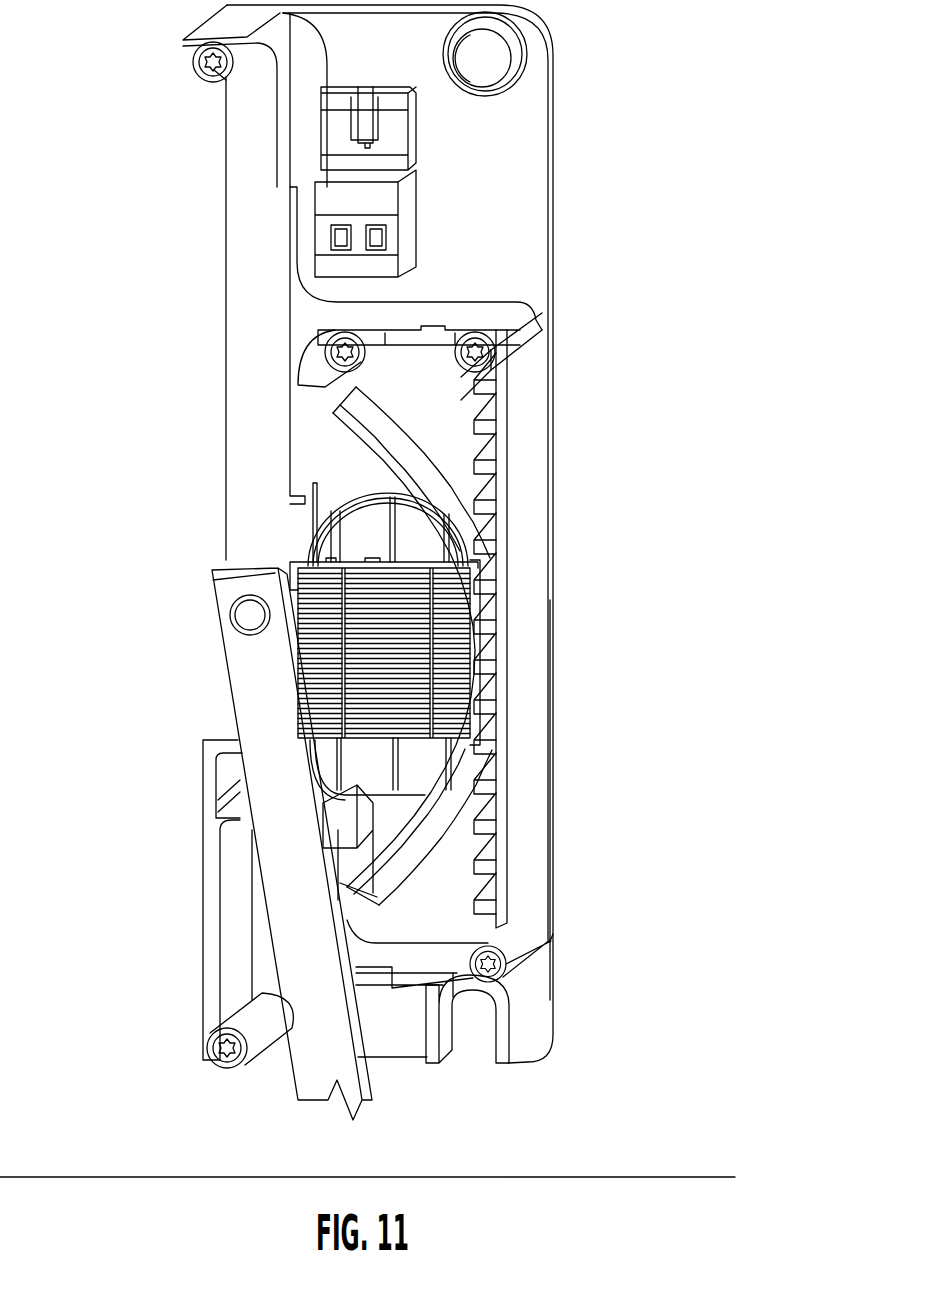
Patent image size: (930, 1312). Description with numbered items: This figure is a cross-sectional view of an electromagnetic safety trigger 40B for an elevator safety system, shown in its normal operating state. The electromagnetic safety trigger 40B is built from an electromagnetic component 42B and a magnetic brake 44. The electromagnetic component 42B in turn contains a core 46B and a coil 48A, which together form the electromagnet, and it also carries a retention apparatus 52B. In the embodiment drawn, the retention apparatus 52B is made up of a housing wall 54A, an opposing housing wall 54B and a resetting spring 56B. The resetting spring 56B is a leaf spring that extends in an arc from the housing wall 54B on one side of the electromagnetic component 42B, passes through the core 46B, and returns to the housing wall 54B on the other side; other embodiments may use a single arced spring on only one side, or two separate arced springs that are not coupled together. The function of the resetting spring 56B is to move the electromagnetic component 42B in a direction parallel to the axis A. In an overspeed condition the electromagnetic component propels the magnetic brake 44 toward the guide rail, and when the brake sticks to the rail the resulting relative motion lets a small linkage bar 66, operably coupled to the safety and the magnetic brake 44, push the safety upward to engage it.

The electromagnetic safety trigger 40B is at (652, 72).
The electromagnetic component 42B is at (567, 640).
The magnetic brake 44 is at (227, 723).
The core 46B is at (457, 722).
The coil 48A is at (352, 538).
The retention apparatus 52B is at (462, 295).
The housing wall 54A is at (548, 447).
The opposing housing wall 54B is at (293, 428).
The resetting spring 56B is at (492, 398).
The linkage bar 66 is at (300, 1085).
The axis A is at (667, 1178).